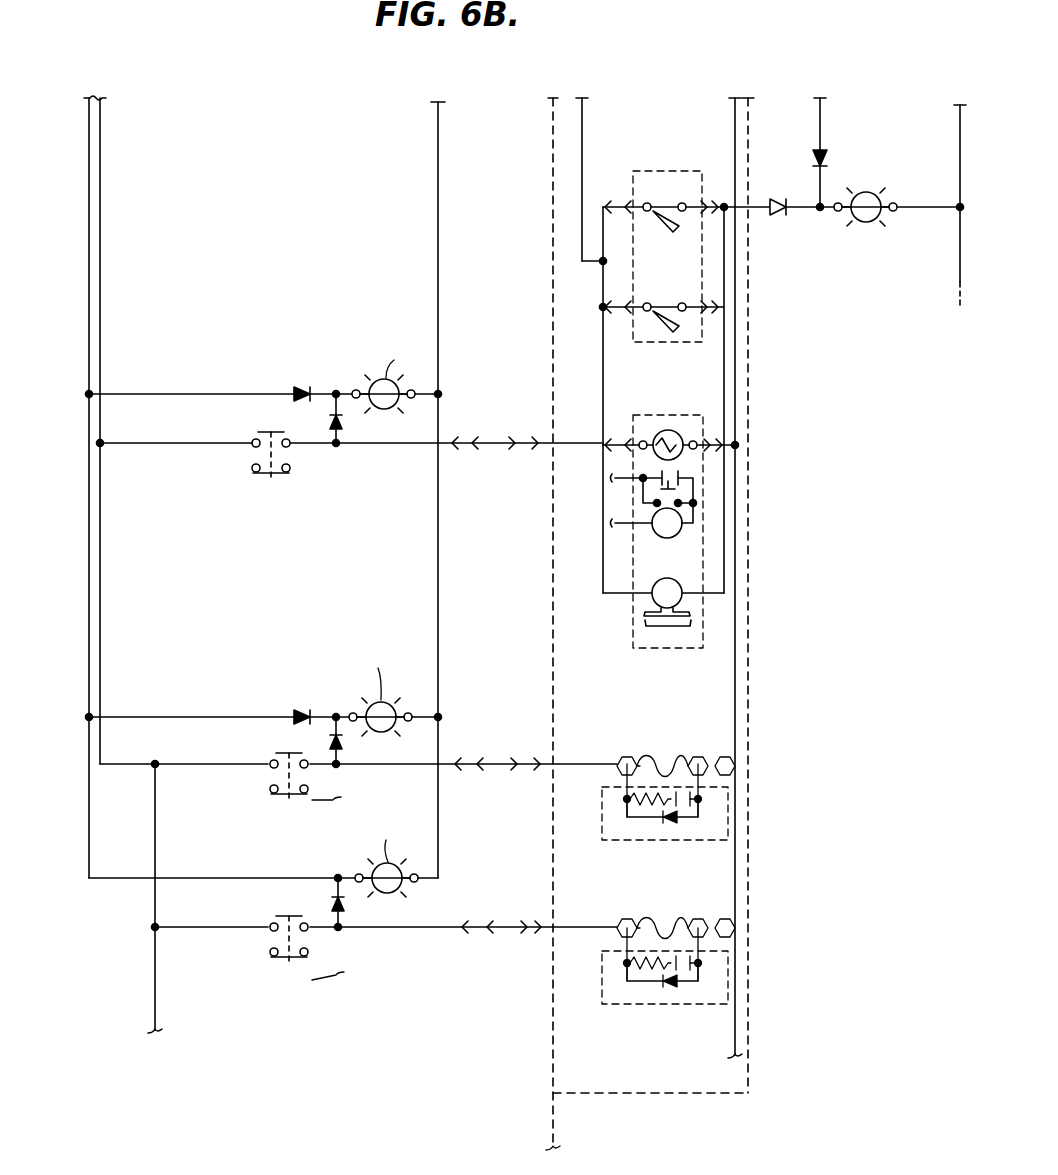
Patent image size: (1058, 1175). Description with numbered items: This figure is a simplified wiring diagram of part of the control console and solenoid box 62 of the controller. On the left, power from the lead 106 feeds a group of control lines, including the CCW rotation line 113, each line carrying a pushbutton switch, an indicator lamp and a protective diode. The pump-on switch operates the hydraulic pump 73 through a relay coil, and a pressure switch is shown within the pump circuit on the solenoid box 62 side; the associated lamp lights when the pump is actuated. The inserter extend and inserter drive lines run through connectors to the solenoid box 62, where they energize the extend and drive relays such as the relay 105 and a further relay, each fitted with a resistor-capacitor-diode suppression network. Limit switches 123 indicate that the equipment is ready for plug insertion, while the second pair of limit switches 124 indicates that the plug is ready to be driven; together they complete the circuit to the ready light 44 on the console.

The lead 106 is at (100, 258).
The CCW rotation line 113 is at (69, 485).
The solenoid box 62 is at (551, 218).
The limit switches 123 is at (666, 226).
The limit switches 124 is at (666, 332).
The hydraulic pump 73 is at (660, 415).
The inserter extend relay 105 is at (660, 772).
The ready indicator lamp 44 is at (856, 226).